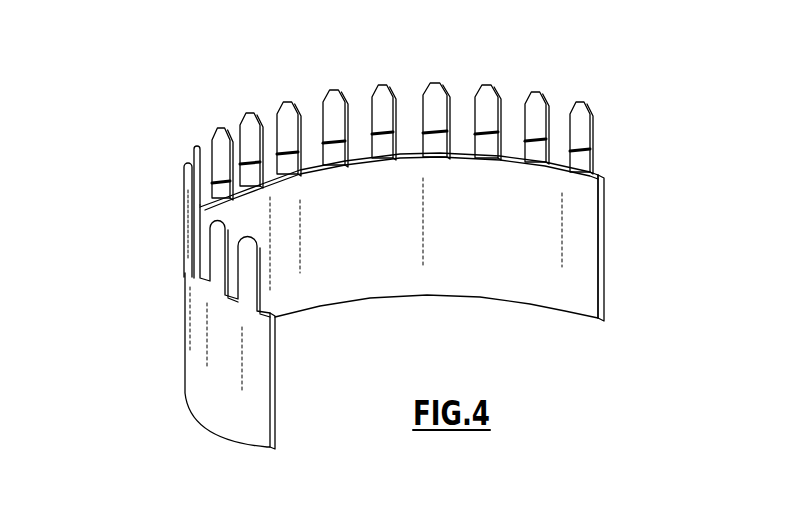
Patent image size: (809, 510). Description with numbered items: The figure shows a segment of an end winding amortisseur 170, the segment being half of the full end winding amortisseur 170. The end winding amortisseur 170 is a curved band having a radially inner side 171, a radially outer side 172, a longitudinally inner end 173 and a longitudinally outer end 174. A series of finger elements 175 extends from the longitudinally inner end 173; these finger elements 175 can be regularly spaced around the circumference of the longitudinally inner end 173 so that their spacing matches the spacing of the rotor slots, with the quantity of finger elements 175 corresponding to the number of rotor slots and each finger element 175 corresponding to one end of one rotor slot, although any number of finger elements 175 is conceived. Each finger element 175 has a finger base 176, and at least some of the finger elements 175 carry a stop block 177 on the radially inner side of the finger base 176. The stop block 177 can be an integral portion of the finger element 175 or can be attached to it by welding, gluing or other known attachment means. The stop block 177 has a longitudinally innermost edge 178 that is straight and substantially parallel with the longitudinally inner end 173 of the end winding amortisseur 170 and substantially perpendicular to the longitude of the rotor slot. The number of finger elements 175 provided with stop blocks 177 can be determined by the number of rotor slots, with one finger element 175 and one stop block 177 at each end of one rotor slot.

The end winding amortisseur 170 is at (452, 246).
The radially inner side 171 is at (580, 245).
The radially outer side 172 is at (198, 382).
The longitudinally inner end 173 is at (600, 175).
The longitudinally outer end 174 is at (498, 298).
The finger element 175 is at (533, 104).
The finger base 176 is at (192, 256).
The stop block 177 is at (253, 170).
The longitudinally innermost edge 178 is at (336, 150).